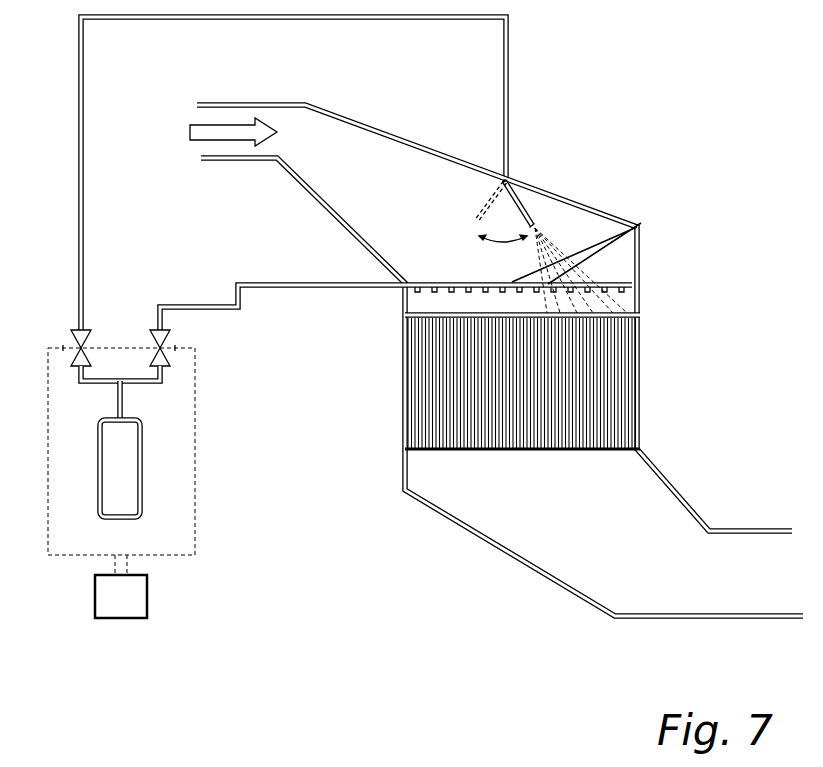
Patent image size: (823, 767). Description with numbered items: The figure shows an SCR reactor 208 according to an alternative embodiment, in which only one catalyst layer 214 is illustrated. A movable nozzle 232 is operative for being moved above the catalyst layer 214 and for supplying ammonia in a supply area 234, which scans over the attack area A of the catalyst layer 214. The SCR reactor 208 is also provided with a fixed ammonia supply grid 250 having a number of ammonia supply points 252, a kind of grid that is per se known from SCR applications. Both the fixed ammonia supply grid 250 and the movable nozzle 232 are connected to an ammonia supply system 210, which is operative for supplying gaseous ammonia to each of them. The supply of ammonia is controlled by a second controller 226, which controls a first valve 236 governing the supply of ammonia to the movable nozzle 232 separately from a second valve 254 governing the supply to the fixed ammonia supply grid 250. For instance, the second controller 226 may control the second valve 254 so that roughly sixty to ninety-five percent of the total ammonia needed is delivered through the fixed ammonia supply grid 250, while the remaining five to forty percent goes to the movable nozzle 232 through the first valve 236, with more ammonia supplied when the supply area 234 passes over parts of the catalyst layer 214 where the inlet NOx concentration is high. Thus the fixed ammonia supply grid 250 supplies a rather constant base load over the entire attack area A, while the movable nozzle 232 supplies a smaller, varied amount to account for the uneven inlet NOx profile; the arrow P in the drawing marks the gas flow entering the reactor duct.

The SCR reactor 208 is at (650, 345).
The ammonia supply system 210 is at (130, 465).
The catalyst layer 214 is at (617, 398).
The second controller 226 is at (140, 595).
The movable nozzle 232 is at (519, 204).
The supply area 234 is at (597, 315).
The first valve 236 is at (74, 330).
The fixed ammonia supply grid 250 is at (383, 258).
The ammonia supply points 252 is at (640, 226).
The second valve 254 is at (167, 340).
The attack area A is at (447, 313).
The process gas flow P is at (222, 135).